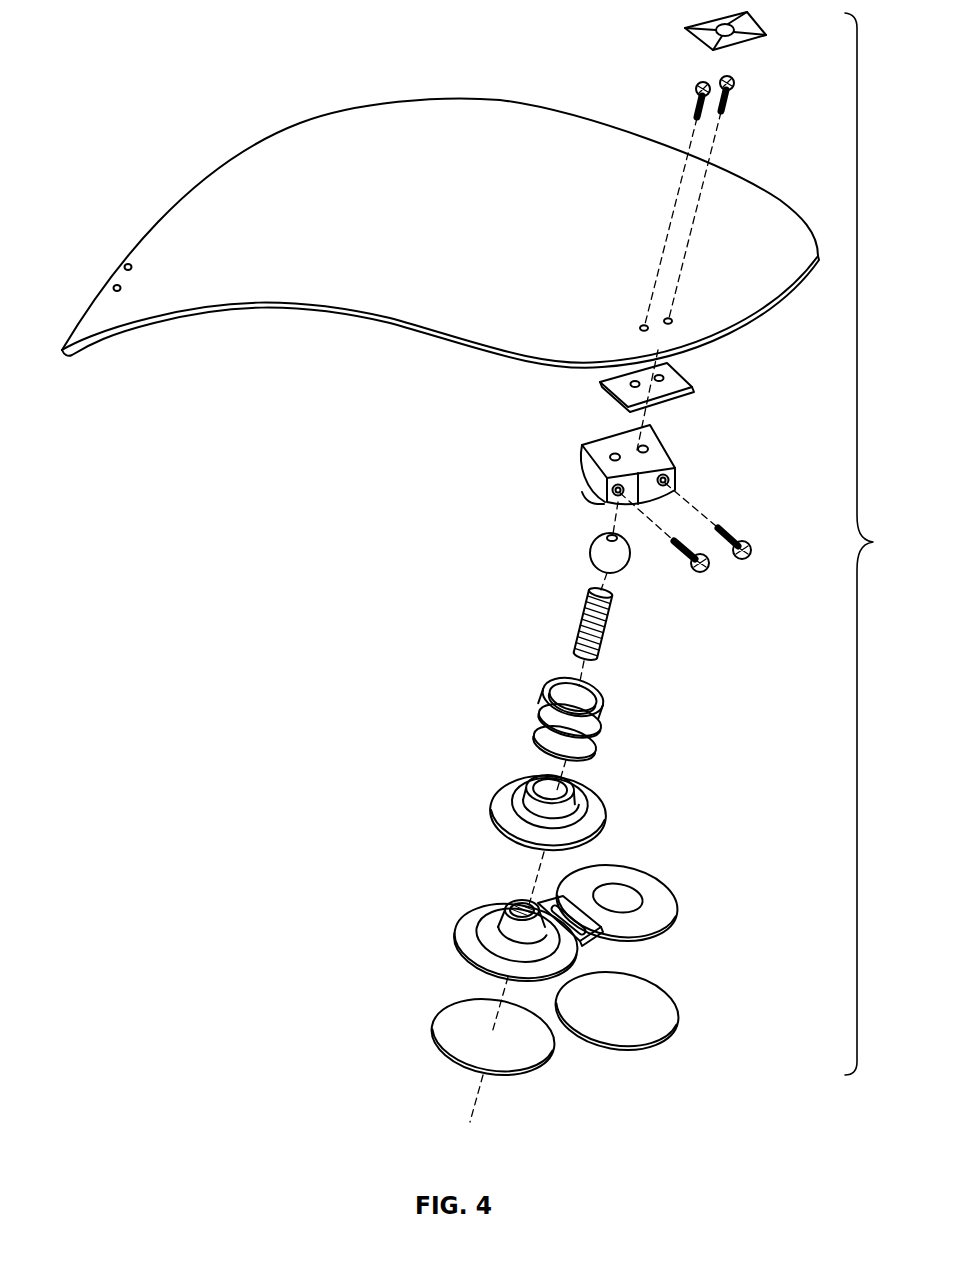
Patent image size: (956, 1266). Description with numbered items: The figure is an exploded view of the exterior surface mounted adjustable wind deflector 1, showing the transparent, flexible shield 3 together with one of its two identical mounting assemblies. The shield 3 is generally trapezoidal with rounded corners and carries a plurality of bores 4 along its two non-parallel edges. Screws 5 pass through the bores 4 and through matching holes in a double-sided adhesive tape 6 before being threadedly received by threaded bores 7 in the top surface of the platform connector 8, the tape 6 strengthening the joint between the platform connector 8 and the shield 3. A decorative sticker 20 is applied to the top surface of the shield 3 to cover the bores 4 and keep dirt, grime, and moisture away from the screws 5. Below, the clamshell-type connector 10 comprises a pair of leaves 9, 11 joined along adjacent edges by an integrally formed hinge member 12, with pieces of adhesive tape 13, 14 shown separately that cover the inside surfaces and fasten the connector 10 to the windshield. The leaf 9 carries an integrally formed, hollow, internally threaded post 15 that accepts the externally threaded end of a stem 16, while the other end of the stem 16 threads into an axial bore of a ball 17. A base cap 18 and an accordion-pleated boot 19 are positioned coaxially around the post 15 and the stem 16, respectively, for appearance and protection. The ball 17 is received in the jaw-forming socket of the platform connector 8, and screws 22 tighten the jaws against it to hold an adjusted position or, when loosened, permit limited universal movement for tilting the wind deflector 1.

The wind deflector 1 is at (868, 544).
The shield 3 is at (203, 177).
The bores 4 is at (124, 266).
The screws 5 is at (736, 81).
The double-sided adhesive tape 6 is at (693, 386).
The threaded bores 7 is at (612, 454).
The platform connector 8 is at (596, 477).
The leaf 9 is at (456, 930).
The clamshell-type connector 10 is at (458, 945).
The leaf 11 is at (663, 912).
The hinge member 12 is at (593, 942).
The adhesive tape 13 is at (536, 1058).
The adhesive tape 14 is at (664, 1025).
The post 15 is at (507, 906).
The stem 16 is at (577, 620).
The ball 17 is at (597, 547).
The base cap 18 is at (491, 806).
The accordion-pleated boot 19 is at (598, 738).
The decorative sticker 20 is at (767, 33).
The screws 22 is at (751, 546).